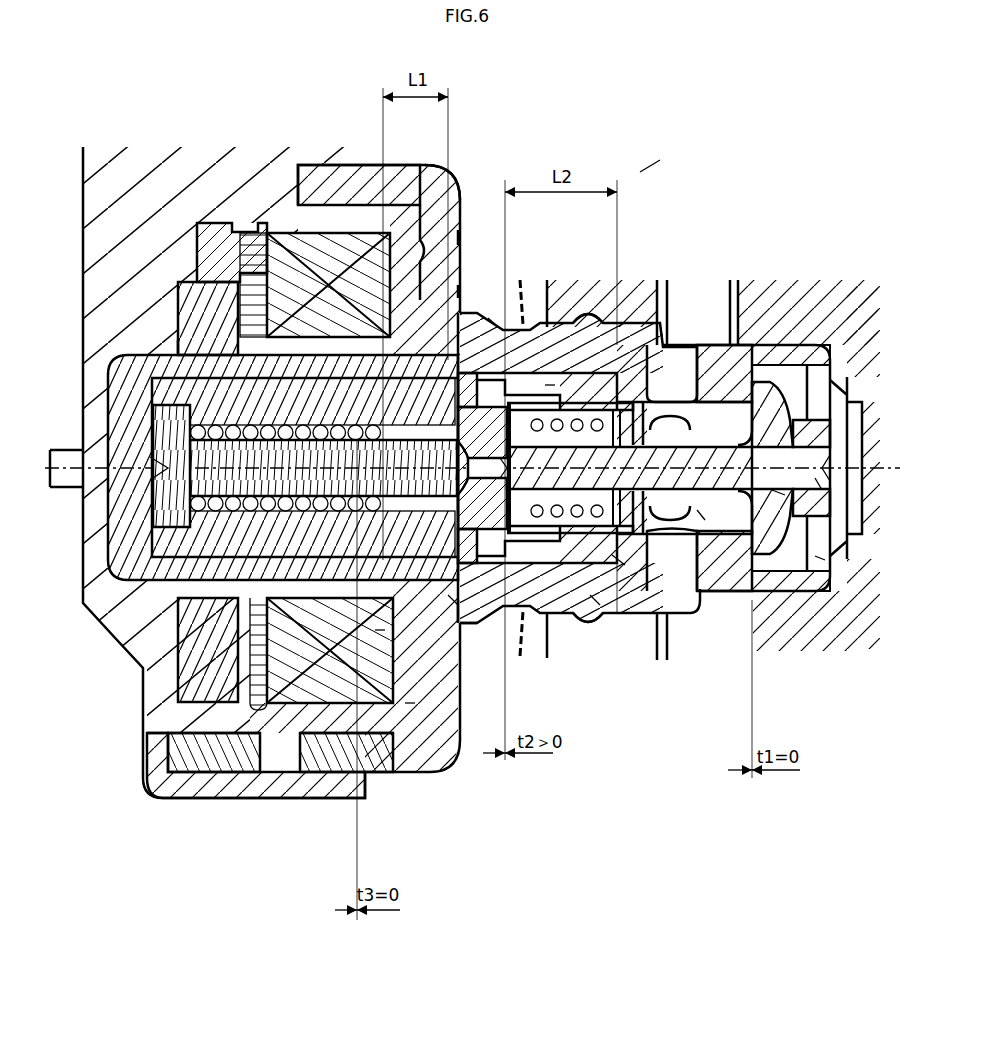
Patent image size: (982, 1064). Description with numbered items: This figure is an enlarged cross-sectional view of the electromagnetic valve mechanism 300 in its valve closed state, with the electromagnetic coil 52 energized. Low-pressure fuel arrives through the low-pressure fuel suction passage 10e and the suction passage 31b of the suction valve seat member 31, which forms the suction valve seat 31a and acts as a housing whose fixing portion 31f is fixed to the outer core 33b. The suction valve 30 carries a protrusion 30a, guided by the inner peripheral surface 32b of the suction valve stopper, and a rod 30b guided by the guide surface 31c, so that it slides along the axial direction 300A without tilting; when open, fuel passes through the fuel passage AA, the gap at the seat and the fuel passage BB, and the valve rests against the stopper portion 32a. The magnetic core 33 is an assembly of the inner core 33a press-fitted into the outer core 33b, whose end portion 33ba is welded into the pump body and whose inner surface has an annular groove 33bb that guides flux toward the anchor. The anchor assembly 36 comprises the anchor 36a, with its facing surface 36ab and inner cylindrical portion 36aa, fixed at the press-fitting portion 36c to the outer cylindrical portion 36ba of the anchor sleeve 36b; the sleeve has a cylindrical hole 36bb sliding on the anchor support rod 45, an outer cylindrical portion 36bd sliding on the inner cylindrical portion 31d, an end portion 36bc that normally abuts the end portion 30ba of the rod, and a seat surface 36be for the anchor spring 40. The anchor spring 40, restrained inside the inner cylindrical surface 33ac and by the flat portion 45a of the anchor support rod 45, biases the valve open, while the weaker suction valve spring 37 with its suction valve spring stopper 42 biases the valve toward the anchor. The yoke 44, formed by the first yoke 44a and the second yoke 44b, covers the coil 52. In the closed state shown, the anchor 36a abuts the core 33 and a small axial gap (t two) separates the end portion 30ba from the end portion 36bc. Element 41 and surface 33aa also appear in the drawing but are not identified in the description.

The electromagnetic valve mechanism 300 is at (655, 170).
The axial direction 300A is at (865, 470).
The low-pressure fuel suction passage 10e is at (682, 360).
The suction valve 30 is at (765, 392).
The protrusion 30a is at (849, 450).
The rod 30b is at (617, 403).
The end portion of the rod 30ba is at (492, 322).
The suction valve seat member 31 is at (725, 580).
The suction valve seat 31a is at (778, 495).
The suction passage 31b is at (710, 365).
The guide surface 31c is at (652, 540).
The inner cylindrical portion of the suction valve seat member 31d is at (452, 600).
The fixing portion 31f is at (595, 600).
The stopper portion 32a is at (822, 553).
The inner peripheral surface of the suction valve stopper 32b is at (820, 485).
The magnetic core 33 is at (43, 660).
The inner core 33a is at (165, 585).
The coil 33aa is at (300, 300).
The inner cylindrical surface of the inner core 33ac is at (183, 353).
The outer core 33b is at (155, 675).
The end portion of the outer core 33ba is at (618, 560).
The annular groove 33bb is at (402, 355).
The anchor assembly 36 is at (545, 128).
The anchor 36a is at (462, 400).
The inner cylindrical portion of the anchor 36aa is at (420, 655).
The facing surface 36ab is at (332, 205).
The anchor sleeve 36b is at (500, 370).
The outer cylindrical portion of the anchor sleeve 36ba is at (459, 290).
The cylindrical hole 36bb is at (410, 705).
The end portion of the anchor sleeve 36bc is at (550, 390).
The outer cylindrical portion of the anchor sleeve on the valve side 36bd is at (453, 615).
The seat surface of the anchor spring 36be is at (378, 630).
The press-fitting portion 36c is at (459, 237).
The suction valve spring 37 is at (585, 315).
The anchor spring 40 is at (288, 688).
The bolt 41 is at (812, 355).
The suction valve spring stopper 42 is at (588, 592).
The yoke 44 is at (237, 889).
The first yoke 44a is at (226, 757).
The second yoke 44b is at (158, 735).
The anchor support rod 45 is at (258, 300).
The flat portion 45a is at (180, 357).
The electromagnetic coil 52 is at (330, 685).
The fuel passage AA is at (700, 520).
The fuel passage BB is at (822, 560).